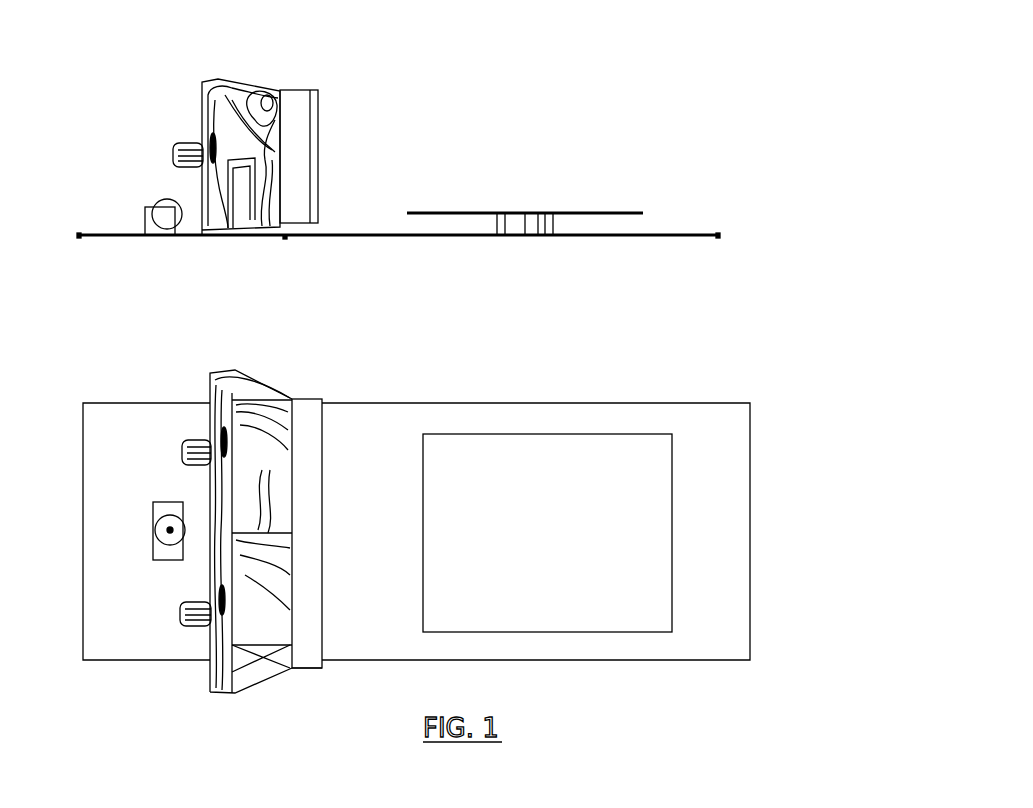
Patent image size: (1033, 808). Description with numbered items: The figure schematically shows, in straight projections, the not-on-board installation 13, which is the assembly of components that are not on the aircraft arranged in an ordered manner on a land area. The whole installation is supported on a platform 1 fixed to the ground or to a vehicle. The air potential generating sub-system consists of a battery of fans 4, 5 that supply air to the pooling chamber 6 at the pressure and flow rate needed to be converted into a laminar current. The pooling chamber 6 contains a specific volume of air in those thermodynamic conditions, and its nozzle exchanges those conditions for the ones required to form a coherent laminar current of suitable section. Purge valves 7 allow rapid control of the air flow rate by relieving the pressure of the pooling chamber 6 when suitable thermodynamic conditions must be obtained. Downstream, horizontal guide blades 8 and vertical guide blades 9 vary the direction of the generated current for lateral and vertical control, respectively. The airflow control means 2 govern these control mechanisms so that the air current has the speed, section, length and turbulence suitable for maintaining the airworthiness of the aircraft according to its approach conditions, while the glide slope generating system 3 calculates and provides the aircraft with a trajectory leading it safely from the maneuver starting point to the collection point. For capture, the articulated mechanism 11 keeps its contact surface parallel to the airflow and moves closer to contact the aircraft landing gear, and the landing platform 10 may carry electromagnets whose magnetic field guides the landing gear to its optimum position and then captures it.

The platform 1 is at (355, 238).
The airflow control means 2 is at (145, 222).
The glide slope generating system 3 is at (160, 204).
The fan 4 is at (180, 145).
The fan 5 is at (207, 80).
The pooling chamber 6 is at (263, 85).
The purge valves 7 is at (305, 670).
The horizontal guide blades 8 is at (323, 552).
The vertical guide blades 9 is at (322, 92).
The landing platform 10 is at (588, 210).
The articulated mechanism 11 is at (555, 236).
The not-on-board installation 13 is at (638, 125).